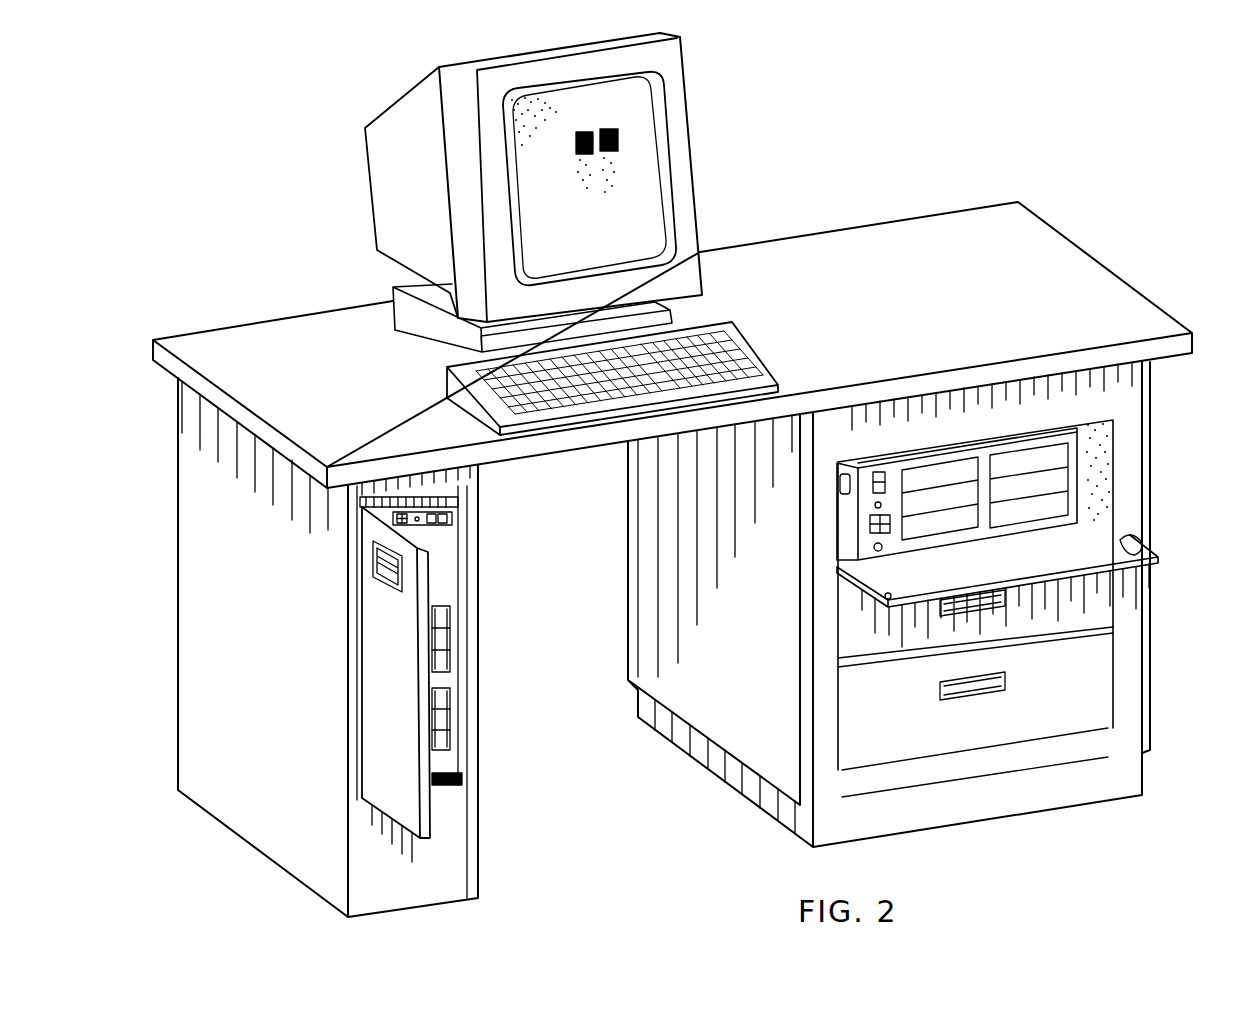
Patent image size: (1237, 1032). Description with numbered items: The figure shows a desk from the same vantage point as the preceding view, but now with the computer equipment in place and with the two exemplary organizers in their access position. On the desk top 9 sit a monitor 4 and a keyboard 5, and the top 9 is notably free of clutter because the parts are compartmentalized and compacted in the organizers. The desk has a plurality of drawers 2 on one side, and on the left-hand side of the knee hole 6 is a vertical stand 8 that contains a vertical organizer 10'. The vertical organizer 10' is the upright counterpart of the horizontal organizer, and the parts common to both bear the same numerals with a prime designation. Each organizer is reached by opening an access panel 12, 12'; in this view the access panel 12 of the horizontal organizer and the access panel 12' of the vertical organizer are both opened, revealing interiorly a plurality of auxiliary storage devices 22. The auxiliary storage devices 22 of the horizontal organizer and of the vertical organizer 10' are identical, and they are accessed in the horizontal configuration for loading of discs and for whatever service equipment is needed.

The drawers 2 is at (1092, 705).
The monitor 4 is at (690, 113).
The keyboard 5 is at (717, 323).
The knee hole 6 is at (562, 632).
The vertical stand 8 is at (263, 630).
The top 9 is at (908, 320).
The vertical organizer 10' is at (456, 692).
The access panel 12 is at (1037, 548).
The access panel 12' is at (315, 700).
The auxiliary storage devices 22 is at (440, 737).